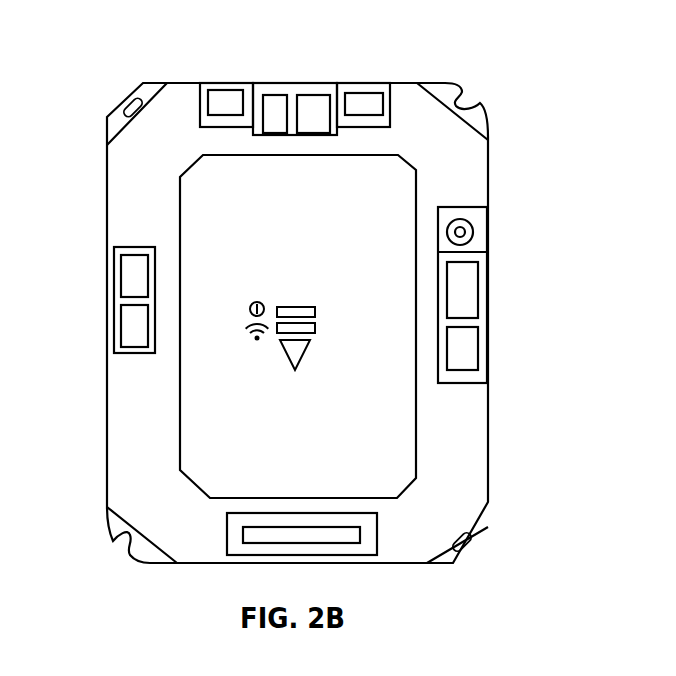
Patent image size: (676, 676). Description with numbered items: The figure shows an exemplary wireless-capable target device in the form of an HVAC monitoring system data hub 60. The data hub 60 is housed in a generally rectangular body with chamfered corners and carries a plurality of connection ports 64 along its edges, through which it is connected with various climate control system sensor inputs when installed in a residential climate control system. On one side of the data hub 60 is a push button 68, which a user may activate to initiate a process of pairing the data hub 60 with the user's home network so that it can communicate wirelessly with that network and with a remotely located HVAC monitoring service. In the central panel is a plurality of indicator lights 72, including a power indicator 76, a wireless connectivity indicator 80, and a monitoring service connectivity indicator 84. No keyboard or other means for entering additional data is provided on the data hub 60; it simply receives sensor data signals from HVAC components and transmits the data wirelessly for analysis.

The HVAC monitoring system data hub 60 is at (505, 55).
The connection ports 64 is at (130, 273).
The push button 68 is at (475, 232).
The indicator lights 72 is at (318, 314).
The power indicator 76 is at (315, 312).
The wireless connectivity indicator 80 is at (315, 328).
The monitoring service connectivity indicator 84 is at (305, 353).